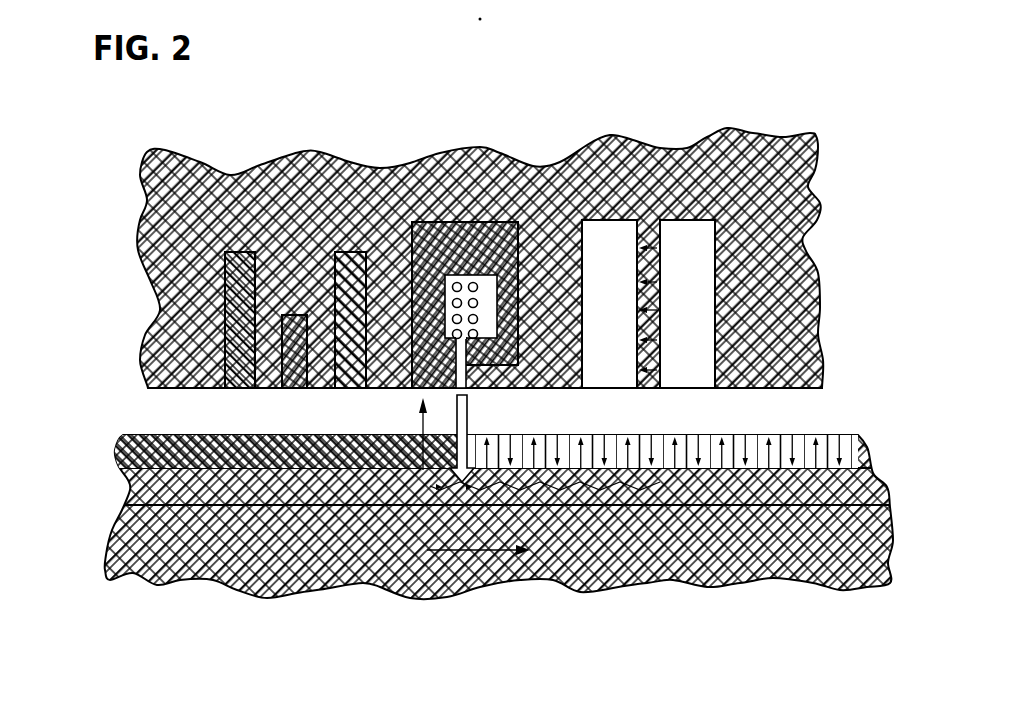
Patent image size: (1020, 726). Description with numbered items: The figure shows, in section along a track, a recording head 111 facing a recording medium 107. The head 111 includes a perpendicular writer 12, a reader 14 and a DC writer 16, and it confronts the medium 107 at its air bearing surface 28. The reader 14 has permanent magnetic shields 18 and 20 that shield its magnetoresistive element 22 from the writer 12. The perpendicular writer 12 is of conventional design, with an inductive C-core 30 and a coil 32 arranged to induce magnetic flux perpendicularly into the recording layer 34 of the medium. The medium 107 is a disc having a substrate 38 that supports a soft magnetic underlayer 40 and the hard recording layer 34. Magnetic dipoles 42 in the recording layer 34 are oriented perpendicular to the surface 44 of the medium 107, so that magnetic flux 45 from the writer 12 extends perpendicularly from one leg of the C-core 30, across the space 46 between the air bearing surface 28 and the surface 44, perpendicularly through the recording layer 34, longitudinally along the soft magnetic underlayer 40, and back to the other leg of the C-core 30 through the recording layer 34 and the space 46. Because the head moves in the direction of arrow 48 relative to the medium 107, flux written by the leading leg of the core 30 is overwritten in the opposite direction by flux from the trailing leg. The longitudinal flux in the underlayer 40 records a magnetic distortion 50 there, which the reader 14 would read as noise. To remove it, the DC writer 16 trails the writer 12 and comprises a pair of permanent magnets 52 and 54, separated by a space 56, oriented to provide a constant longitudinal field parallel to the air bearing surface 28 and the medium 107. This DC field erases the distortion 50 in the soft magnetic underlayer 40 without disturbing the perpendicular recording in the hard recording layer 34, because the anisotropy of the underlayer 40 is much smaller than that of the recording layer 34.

The perpendicular writer 12 is at (484, 243).
The reader 14 is at (285, 248).
The DC writer 16 is at (675, 235).
The permanent magnetic shield 18 is at (225, 256).
The permanent magnetic shield 20 is at (347, 253).
The magnetoresistive element 22 is at (293, 314).
The air bearing surface 28 is at (158, 396).
The inductive core 30 is at (475, 222).
The coil 32 is at (477, 302).
The recording layer 34 is at (481, 434).
The substrate 38 is at (104, 557).
The soft magnetic underlayer 40 is at (474, 522).
The magnetic dipoles 42 is at (700, 452).
The surface of recording medium 44 is at (790, 433).
The magnetic flux 45 is at (448, 490).
The space 46 is at (805, 397).
The arrow 48 is at (467, 556).
The magnetic distortion 50 is at (545, 483).
The permanent magnet 52 is at (622, 220).
The permanent magnet 54 is at (716, 213).
The space between legs 56 is at (674, 197).
The medium 107 is at (112, 492).
The recording head 111 is at (830, 290).